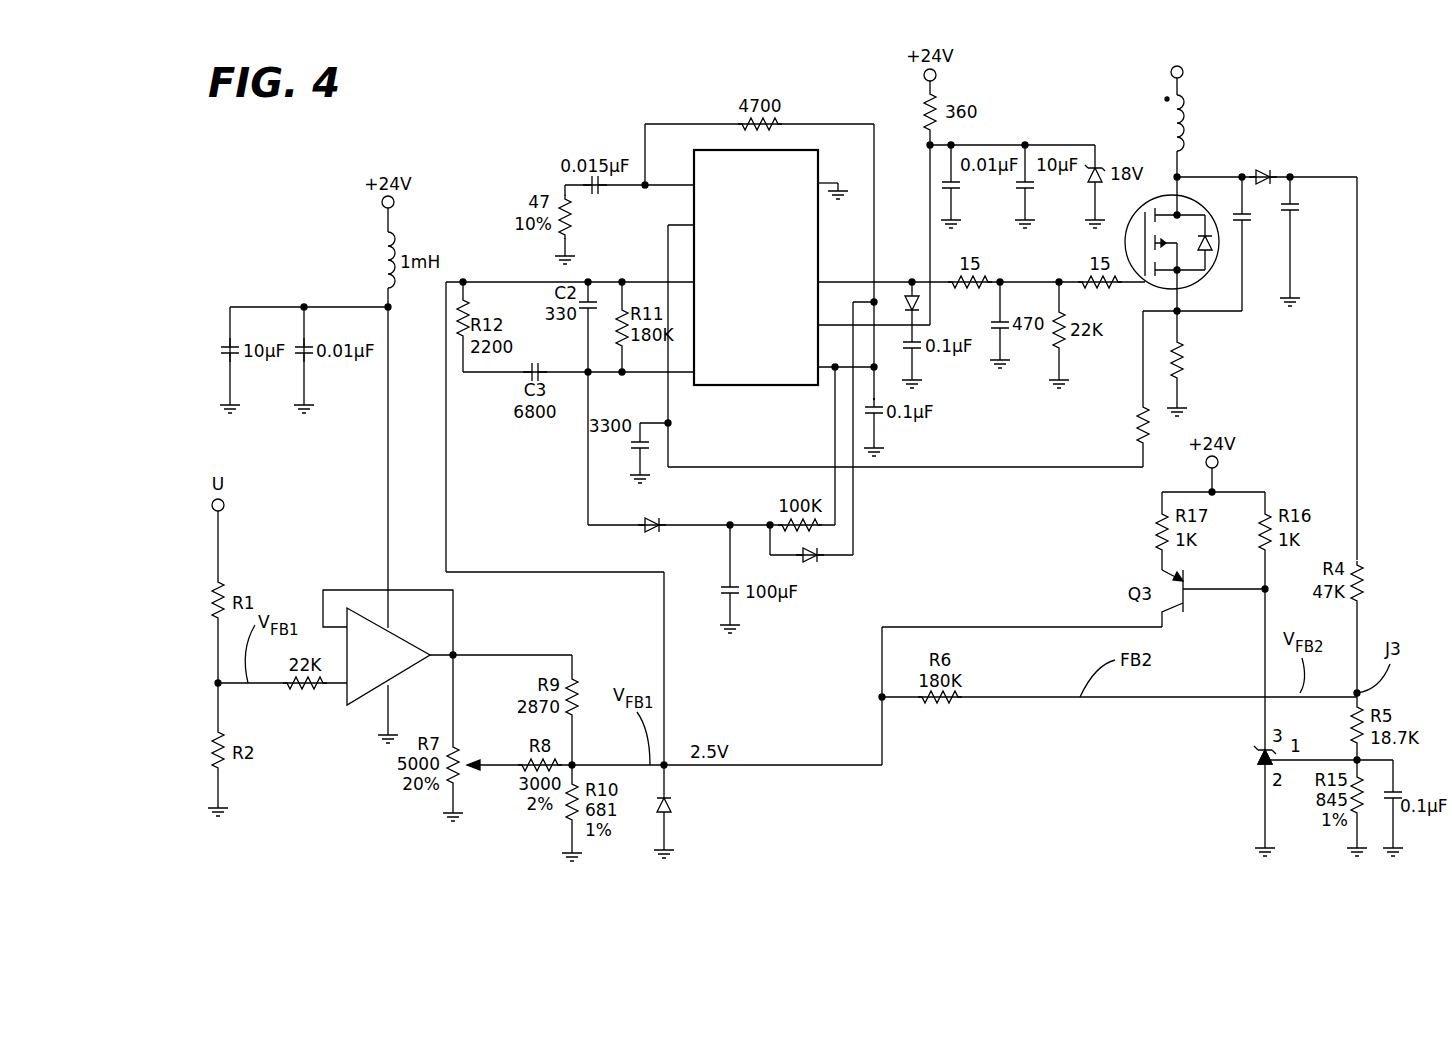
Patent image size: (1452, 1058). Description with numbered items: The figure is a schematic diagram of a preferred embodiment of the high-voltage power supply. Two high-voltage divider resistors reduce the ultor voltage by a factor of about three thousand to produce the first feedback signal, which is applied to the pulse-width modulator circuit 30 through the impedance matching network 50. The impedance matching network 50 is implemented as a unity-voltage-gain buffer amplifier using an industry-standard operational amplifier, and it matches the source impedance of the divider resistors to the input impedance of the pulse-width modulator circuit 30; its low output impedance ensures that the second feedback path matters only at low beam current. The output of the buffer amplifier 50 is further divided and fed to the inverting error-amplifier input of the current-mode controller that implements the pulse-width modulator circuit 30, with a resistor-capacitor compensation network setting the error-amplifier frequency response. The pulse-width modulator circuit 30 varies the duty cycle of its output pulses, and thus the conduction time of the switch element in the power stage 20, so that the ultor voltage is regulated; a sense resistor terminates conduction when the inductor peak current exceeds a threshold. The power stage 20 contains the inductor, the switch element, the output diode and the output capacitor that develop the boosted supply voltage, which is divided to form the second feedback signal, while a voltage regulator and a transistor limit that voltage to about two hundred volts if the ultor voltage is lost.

The power stage / boost converter output section 20 is at (1231, 302).
The pulse-width modulator circuit 30 is at (756, 267).
The impedance matching network 50 is at (362, 702).